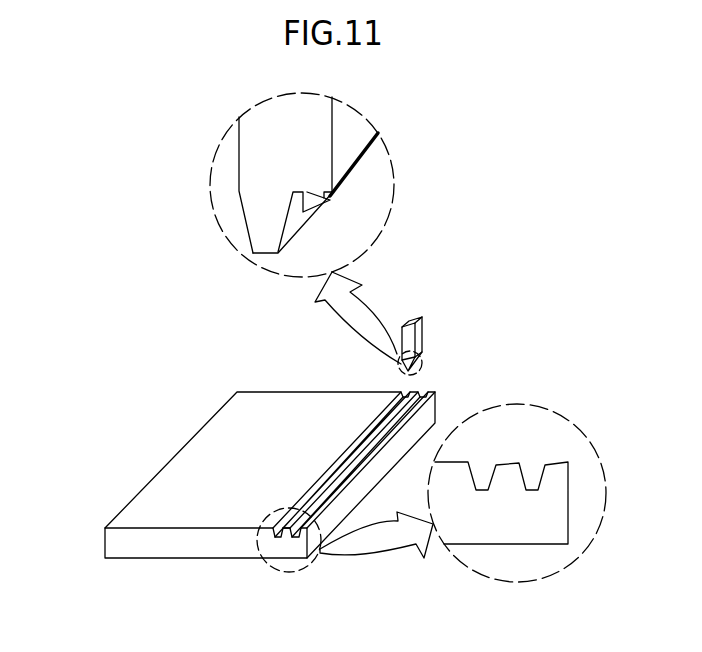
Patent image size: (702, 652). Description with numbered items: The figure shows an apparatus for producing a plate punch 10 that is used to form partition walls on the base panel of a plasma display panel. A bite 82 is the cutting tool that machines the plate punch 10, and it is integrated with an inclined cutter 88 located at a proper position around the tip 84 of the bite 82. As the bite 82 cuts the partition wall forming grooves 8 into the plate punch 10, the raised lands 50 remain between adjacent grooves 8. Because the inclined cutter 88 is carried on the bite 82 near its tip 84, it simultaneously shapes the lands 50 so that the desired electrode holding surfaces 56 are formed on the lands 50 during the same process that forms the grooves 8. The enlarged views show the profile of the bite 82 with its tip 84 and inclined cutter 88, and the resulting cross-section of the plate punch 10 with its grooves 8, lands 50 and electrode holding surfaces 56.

The plate punch 10 is at (197, 468).
The electrode holding surfaces 56 is at (292, 532).
The partition wall forming grooves 8 is at (277, 537).
The lands 50 is at (292, 543).
The bite 82 is at (239, 173).
The tip 84 is at (265, 228).
The inclined cutter 88 is at (330, 198).